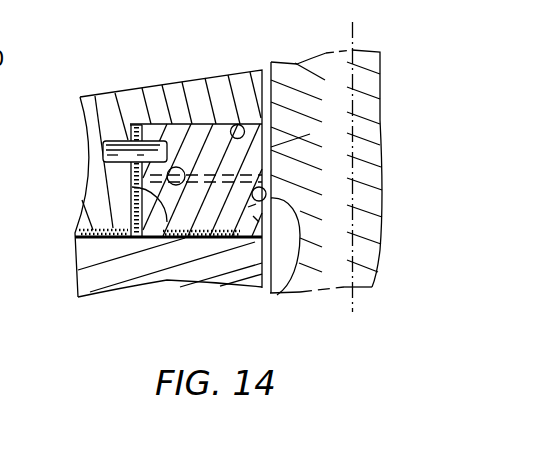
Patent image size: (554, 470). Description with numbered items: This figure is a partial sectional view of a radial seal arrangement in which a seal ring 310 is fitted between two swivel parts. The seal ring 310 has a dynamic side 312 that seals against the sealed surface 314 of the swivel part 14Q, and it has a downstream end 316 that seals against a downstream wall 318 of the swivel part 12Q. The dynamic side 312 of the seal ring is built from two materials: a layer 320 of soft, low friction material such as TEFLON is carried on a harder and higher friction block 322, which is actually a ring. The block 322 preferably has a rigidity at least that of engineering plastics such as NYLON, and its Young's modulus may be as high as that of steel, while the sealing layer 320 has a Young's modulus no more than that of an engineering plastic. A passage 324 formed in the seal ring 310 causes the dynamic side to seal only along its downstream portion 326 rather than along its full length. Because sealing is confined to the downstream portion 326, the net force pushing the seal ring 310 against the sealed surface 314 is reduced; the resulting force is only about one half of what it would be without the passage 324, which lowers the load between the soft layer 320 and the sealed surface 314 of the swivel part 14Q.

The swivel part 12Q is at (118, 297).
The swivel part 14Q is at (369, 298).
The seal ring 310 is at (122, 210).
The dynamic side 312 is at (279, 297).
The sealed surface 314 is at (266, 193).
The downstream end 316 is at (181, 86).
The downstream wall 318 is at (241, 126).
The layer of soft low friction material 320 is at (258, 240).
The block 322 is at (182, 238).
The passage 324 is at (127, 183).
The downstream portion 326 is at (310, 134).